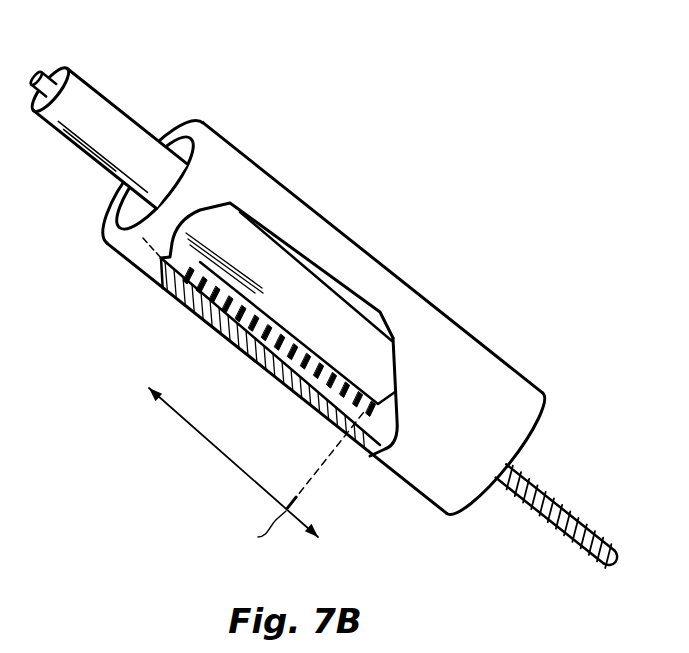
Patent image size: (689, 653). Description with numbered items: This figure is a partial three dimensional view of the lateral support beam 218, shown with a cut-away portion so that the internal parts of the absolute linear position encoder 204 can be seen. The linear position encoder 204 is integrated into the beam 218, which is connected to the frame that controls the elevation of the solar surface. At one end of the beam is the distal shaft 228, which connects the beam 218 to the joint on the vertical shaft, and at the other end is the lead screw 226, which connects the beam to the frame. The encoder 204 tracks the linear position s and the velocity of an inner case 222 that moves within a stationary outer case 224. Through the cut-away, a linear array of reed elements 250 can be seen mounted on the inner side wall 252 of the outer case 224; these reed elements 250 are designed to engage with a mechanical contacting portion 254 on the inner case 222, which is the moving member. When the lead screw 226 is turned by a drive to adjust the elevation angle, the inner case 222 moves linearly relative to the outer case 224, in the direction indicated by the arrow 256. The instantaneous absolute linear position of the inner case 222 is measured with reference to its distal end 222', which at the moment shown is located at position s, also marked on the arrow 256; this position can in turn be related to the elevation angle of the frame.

The lateral support beam 218 is at (322, 285).
The inner case 222 is at (107, 134).
The distal end of inner case 222' is at (348, 359).
The outer case 224 is at (458, 323).
The lead screw 226 is at (553, 495).
The distal shaft 228 is at (44, 70).
The linear position encoder 204 is at (135, 333).
The reed elements 250 is at (230, 337).
The inner side wall 252 is at (163, 291).
The mechanical contacting portion 254 is at (264, 300).
The arrow 256 is at (187, 422).